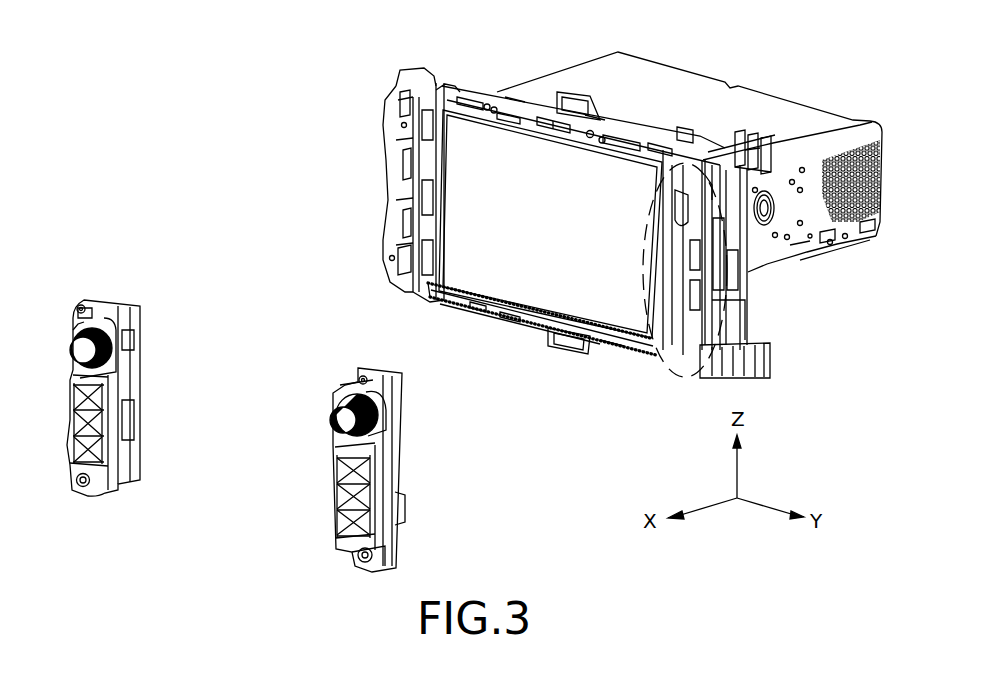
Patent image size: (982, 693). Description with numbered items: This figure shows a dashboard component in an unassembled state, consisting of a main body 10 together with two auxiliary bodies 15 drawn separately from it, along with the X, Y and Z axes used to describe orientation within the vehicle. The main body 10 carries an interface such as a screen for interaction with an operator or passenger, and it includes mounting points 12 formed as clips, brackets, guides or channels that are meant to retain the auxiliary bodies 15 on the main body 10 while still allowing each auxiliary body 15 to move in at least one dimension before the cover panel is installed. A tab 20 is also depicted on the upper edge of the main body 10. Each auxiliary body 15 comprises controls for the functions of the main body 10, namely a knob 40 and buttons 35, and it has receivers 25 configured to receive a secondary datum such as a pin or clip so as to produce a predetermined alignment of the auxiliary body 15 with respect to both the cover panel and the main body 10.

The main body 10 is at (630, 352).
The mounting point 12 is at (753, 310).
The auxiliary body 15 is at (153, 347).
The mounting tab 20 is at (567, 90).
The receiver 25 is at (92, 298).
The button 35 is at (112, 403).
The knob 40 is at (72, 350).